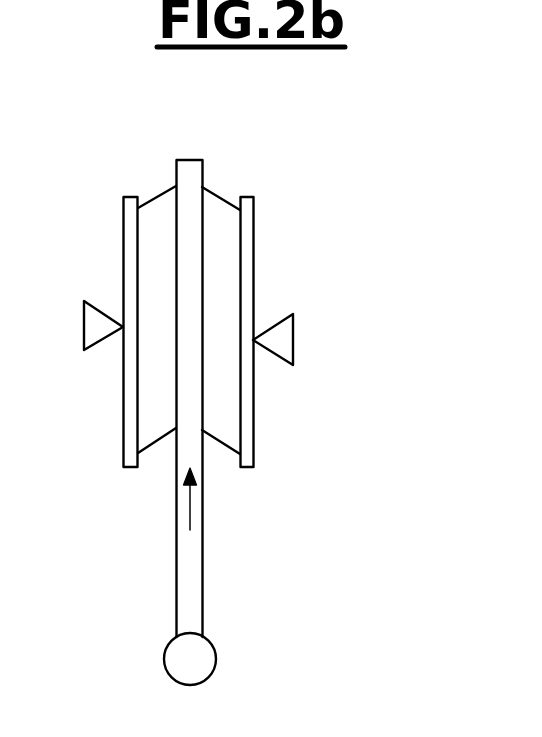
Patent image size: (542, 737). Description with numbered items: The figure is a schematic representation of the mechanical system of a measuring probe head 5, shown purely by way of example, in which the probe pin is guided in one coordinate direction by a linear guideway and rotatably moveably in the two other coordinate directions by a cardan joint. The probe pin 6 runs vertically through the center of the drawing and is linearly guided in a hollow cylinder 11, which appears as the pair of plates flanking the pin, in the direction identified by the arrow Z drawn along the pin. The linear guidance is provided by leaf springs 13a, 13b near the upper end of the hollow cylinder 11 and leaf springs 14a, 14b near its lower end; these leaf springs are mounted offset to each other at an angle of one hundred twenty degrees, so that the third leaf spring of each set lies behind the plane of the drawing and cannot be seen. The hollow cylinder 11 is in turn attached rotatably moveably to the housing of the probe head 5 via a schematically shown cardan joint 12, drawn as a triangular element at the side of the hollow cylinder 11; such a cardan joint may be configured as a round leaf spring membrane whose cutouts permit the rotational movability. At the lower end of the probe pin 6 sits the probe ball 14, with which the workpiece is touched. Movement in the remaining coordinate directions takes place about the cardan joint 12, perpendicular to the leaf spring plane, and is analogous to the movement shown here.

The measuring probe head 5 is at (237, 324).
The probe pin 6 is at (195, 583).
The hollow cylinder 11 is at (254, 408).
The cardan joint 12 is at (280, 347).
The leaf spring 13a is at (225, 200).
The leaf spring 13b is at (157, 195).
The ball 14 is at (203, 665).
The leaf spring 14a is at (227, 442).
The leaf spring 14b is at (157, 445).
The coordinate direction Z is at (192, 513).